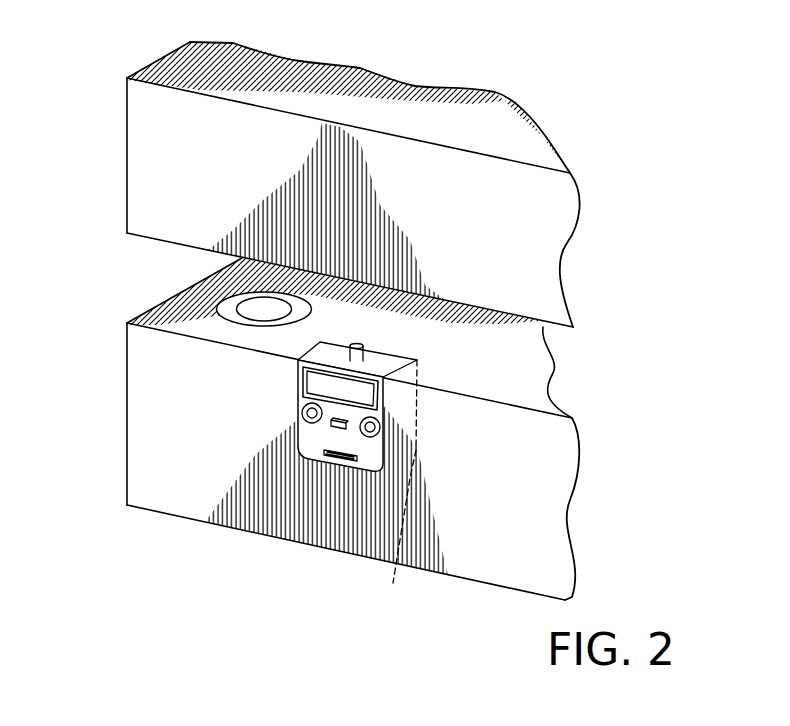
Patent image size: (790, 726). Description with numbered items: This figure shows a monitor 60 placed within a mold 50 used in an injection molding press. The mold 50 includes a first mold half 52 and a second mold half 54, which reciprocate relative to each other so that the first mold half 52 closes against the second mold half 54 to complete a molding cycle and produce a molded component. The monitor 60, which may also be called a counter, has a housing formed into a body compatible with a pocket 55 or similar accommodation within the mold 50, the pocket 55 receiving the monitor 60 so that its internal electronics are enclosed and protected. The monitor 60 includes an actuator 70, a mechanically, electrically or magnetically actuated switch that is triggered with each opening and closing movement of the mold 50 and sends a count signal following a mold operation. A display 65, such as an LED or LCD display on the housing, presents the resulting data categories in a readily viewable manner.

The mold 50 is at (362, 321).
The first mold half 52 is at (148, 462).
The second mold half 54 is at (147, 184).
The pocket 55 is at (377, 460).
The monitor 60 is at (318, 449).
The display 65 is at (358, 397).
The actuator 70 is at (365, 344).